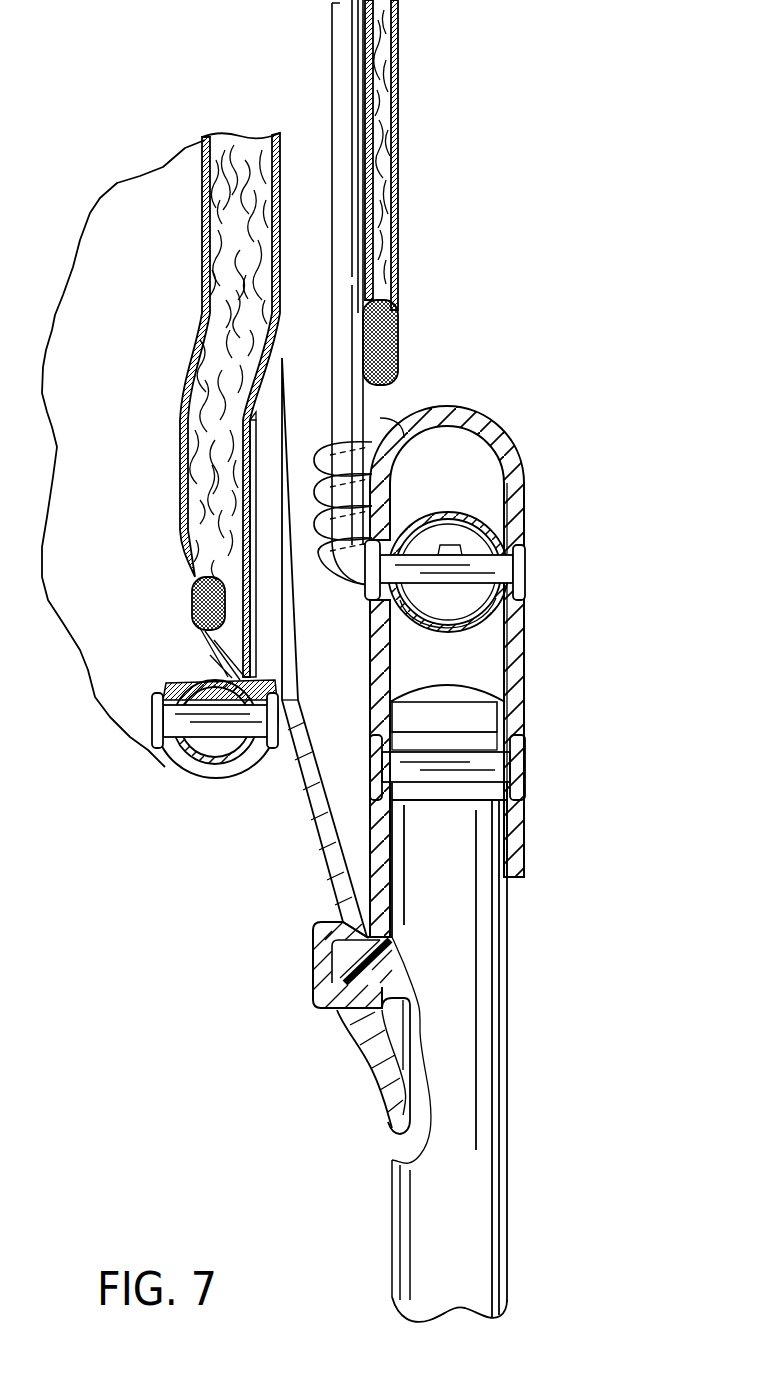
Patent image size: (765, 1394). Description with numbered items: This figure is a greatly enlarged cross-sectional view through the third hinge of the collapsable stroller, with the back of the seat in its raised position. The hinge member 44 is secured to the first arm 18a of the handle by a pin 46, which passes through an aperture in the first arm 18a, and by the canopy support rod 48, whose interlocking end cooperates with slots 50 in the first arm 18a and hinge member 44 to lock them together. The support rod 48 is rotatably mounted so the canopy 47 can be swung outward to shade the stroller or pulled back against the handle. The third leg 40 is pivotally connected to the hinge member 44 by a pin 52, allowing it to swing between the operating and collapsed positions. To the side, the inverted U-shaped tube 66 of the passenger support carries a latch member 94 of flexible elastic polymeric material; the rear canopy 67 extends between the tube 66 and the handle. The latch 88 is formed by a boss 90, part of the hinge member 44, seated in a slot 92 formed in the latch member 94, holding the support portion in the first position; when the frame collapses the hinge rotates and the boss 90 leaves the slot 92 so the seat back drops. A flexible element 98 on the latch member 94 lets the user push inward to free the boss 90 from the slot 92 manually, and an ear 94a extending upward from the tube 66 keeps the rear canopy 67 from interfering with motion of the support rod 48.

The rear canopy 67 is at (200, 155).
The canopy 47 is at (400, 122).
The ear 94a is at (258, 418).
The canopy support rod 48 is at (363, 418).
The hinge member 44 is at (512, 446).
The first arm 18a is at (467, 512).
The slots 50 is at (483, 547).
The pin 46 is at (497, 562).
The pin 52 is at (515, 762).
The third leg 40 is at (460, 1222).
The U-shaped tube 66 is at (215, 797).
The latch member 94 is at (322, 820).
The slot 92 is at (333, 957).
The boss 90 is at (378, 962).
The flexible element 98 is at (370, 1082).
The latch 88 is at (290, 989).